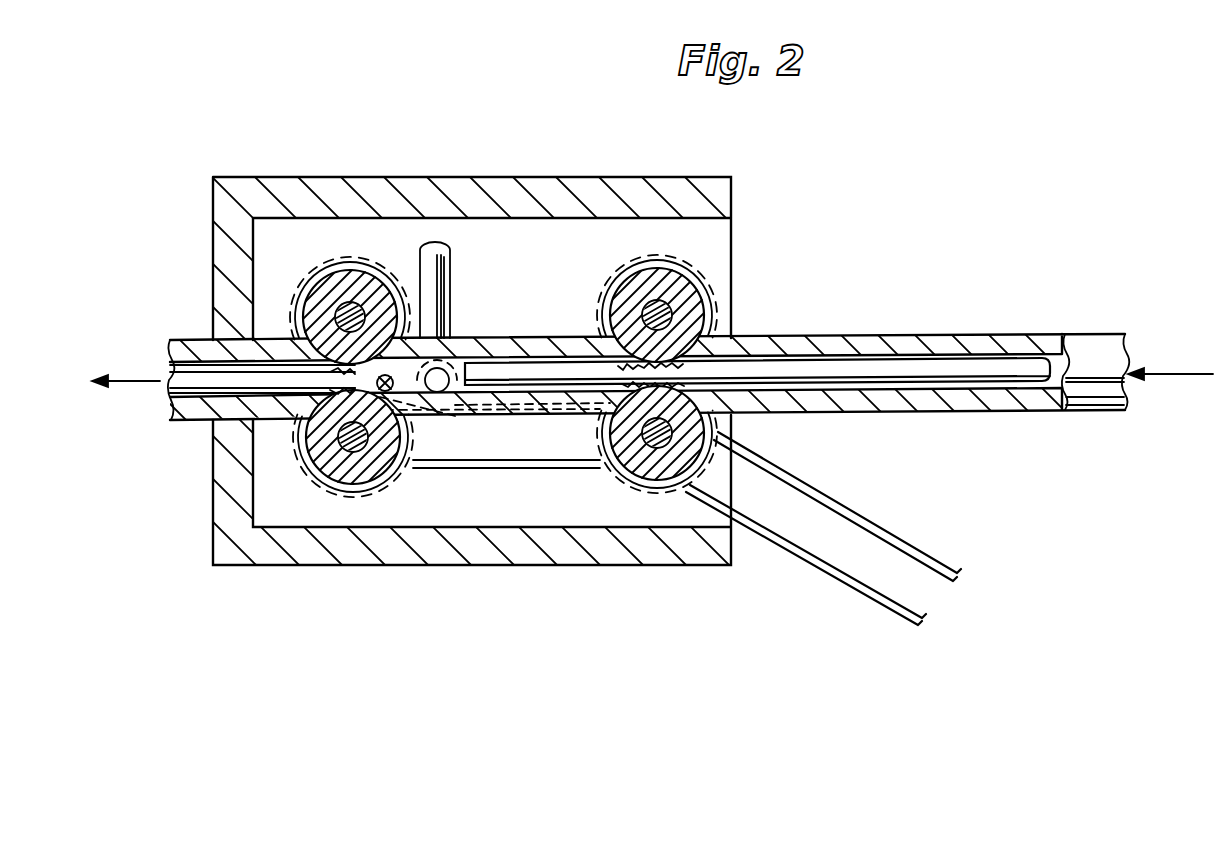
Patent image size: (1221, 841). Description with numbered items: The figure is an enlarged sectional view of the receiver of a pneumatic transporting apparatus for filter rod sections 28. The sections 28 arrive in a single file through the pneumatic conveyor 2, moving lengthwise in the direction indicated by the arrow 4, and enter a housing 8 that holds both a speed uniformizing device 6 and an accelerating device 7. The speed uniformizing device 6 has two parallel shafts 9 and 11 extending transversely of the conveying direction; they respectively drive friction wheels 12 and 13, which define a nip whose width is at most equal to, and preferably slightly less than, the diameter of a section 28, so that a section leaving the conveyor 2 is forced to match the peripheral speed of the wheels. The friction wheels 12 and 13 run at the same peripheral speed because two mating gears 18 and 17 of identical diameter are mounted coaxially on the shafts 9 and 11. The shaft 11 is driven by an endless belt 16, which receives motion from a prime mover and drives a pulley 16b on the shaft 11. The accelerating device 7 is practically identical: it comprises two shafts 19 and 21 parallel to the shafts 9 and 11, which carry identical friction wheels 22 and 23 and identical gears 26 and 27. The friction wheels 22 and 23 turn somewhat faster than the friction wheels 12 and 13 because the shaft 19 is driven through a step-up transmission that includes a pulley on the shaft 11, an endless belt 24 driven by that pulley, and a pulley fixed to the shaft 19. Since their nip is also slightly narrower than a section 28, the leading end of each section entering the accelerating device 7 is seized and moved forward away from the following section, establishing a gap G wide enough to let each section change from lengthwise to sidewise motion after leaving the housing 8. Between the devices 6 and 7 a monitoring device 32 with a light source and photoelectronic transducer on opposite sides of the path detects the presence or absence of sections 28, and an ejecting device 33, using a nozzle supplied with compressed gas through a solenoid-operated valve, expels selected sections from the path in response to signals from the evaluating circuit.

The pneumatic conveyor 2 is at (946, 346).
The arrow 4 is at (1186, 378).
The speed uniformizing device 6 is at (693, 252).
The accelerating device 7 is at (297, 250).
The housing 8 is at (548, 187).
The shaft 9 is at (672, 309).
The shaft 11 is at (670, 452).
The friction wheel 12 is at (688, 272).
The friction wheel 13 is at (641, 460).
The endless belt 16 is at (810, 568).
The pulley 16b is at (713, 470).
The gear 17 is at (618, 480).
The gear 18 is at (684, 262).
The shaft 19 is at (356, 460).
The shaft 21 is at (338, 320).
The friction wheel 22 is at (345, 447).
The friction wheel 23 is at (373, 292).
The endless belt 24 is at (503, 470).
The gear 26 is at (312, 482).
The gear 27 is at (311, 279).
The filter rod section 28 is at (550, 357).
The monitoring device 32 is at (429, 416).
The ejecting device 33 is at (447, 363).
The gap G is at (437, 380).